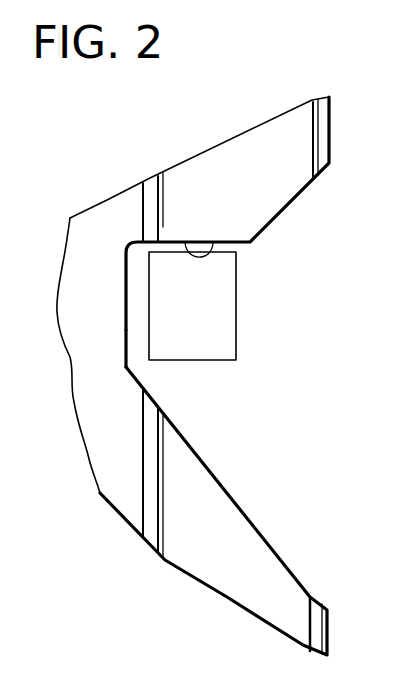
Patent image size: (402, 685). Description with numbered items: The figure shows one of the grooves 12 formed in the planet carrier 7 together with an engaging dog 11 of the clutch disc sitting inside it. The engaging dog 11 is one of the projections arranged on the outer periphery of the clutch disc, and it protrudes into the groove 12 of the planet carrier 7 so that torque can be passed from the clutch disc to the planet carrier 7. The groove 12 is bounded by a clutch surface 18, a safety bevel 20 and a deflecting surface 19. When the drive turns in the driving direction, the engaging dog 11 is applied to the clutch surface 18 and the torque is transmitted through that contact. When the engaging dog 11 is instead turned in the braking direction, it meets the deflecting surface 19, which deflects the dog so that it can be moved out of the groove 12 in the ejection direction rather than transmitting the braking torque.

The planet carrier 7 is at (292, 171).
The engaging dog 11 is at (230, 325).
The groove 12 is at (125, 330).
The clutch surface 18 is at (213, 243).
The deflecting surface 19 is at (250, 517).
The safety bevel 20 is at (282, 212).